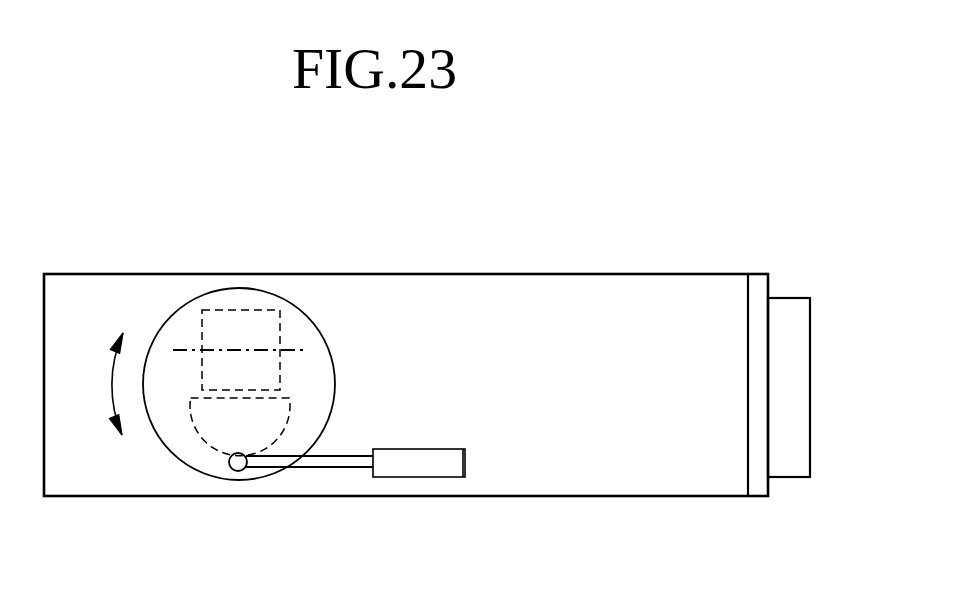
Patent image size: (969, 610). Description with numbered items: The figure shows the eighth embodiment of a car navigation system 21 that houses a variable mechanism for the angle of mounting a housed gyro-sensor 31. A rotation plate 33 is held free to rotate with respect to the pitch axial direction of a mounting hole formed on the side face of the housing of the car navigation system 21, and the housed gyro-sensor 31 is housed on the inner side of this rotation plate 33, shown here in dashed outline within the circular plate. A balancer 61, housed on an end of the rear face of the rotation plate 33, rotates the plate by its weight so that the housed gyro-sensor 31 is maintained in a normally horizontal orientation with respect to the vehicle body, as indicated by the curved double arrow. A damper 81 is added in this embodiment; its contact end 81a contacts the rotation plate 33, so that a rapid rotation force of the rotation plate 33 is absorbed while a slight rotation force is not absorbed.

The car navigation system 21 is at (768, 275).
The housed gyro-sensor 31 is at (239, 308).
The rotation plate 33 is at (307, 318).
The balancer 61 is at (215, 440).
The damper 81 is at (463, 475).
The contact end 81a is at (340, 457).